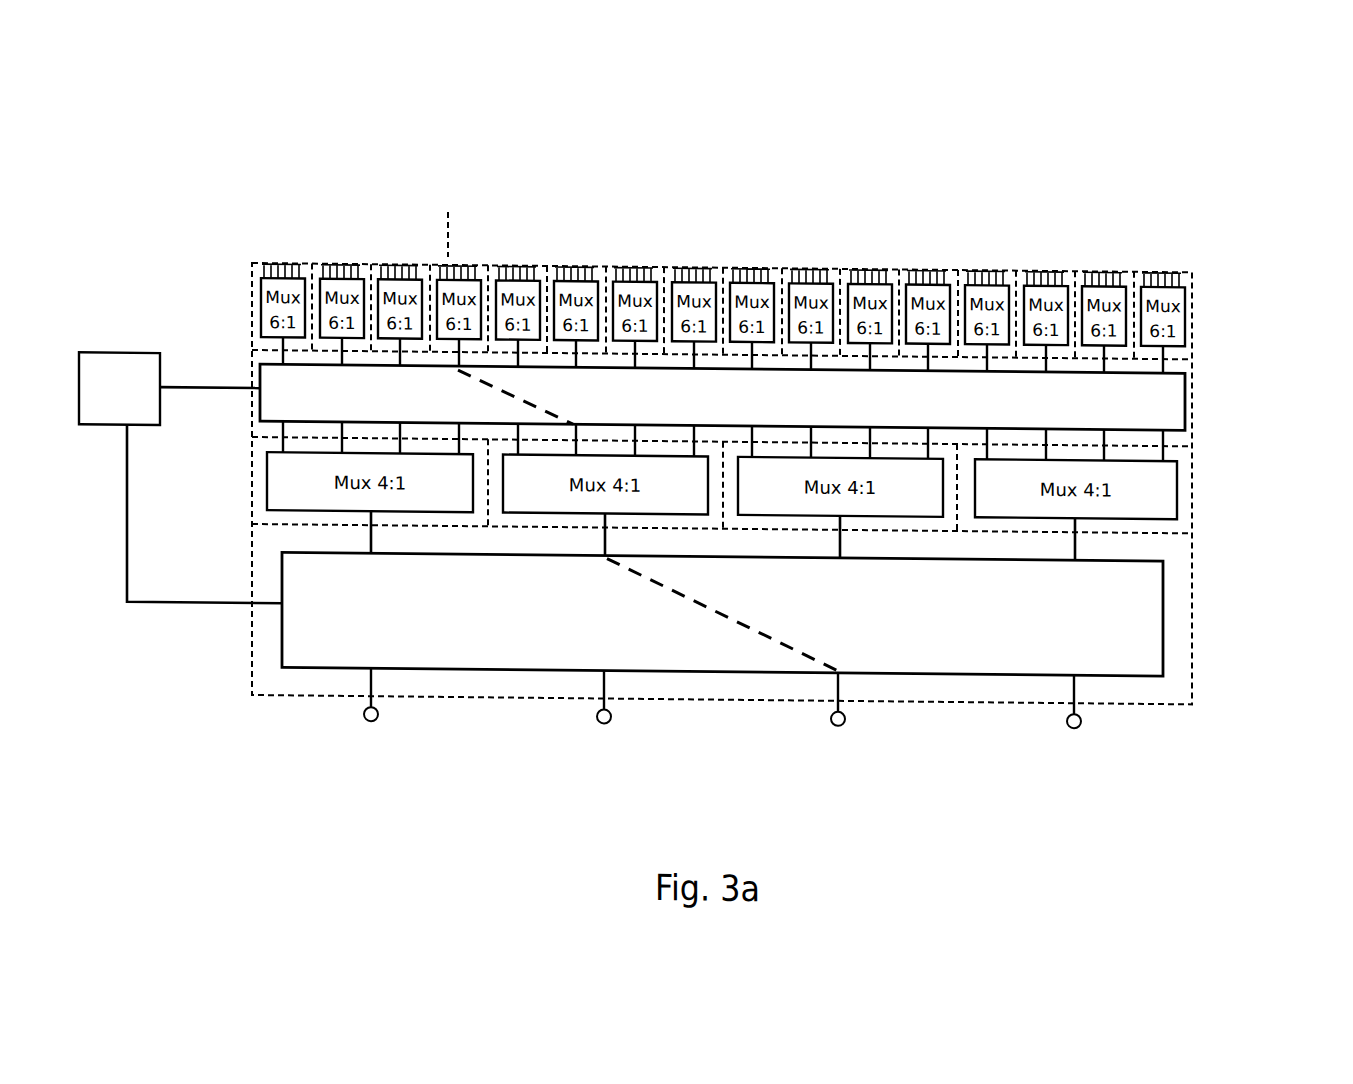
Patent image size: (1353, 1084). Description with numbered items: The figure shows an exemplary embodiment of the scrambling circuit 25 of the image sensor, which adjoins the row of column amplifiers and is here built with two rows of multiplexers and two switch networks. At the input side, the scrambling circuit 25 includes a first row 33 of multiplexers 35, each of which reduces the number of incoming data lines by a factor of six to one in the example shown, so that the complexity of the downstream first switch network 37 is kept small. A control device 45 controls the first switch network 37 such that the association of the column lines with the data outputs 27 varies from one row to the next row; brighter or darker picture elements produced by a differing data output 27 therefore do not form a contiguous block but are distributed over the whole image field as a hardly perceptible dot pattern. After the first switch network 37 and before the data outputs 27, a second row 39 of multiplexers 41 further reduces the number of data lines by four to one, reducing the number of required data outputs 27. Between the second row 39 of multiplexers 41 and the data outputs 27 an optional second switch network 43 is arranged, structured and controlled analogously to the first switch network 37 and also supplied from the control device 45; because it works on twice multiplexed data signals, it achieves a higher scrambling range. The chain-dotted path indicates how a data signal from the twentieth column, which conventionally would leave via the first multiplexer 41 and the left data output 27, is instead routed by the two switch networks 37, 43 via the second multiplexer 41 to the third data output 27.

The scrambling circuit 25 is at (1192, 677).
The data outputs 27 is at (367, 720).
The first row of multiplexers 33 is at (1220, 303).
The multiplexer 35 is at (260, 293).
The first switch network 37 is at (1185, 392).
The second row of multiplexers 39 is at (1215, 477).
The multiplexer 41 is at (268, 481).
The second switch network 43 is at (1163, 606).
The control device 45 is at (102, 354).